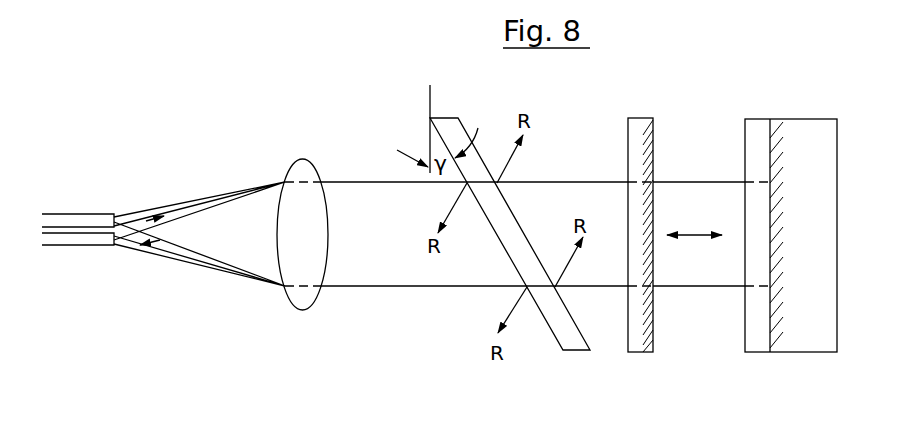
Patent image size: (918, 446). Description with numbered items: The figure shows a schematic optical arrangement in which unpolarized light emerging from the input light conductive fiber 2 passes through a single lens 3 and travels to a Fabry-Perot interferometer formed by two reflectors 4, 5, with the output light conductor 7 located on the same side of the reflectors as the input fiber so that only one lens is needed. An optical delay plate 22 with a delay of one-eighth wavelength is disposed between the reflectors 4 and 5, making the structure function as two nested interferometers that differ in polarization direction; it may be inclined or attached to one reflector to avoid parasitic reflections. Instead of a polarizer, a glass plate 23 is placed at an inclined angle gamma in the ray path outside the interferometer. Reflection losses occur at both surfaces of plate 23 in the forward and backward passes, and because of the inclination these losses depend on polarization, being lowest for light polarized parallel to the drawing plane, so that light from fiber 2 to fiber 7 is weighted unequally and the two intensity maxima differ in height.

The input light conductive fiber 2 is at (95, 213).
The output light conductor 7 is at (97, 247).
The lens 3 is at (288, 158).
The glass plate 23 is at (461, 113).
The reflector 4 is at (628, 102).
The reflector 5 is at (812, 119).
The optical delay plate 22 is at (757, 353).